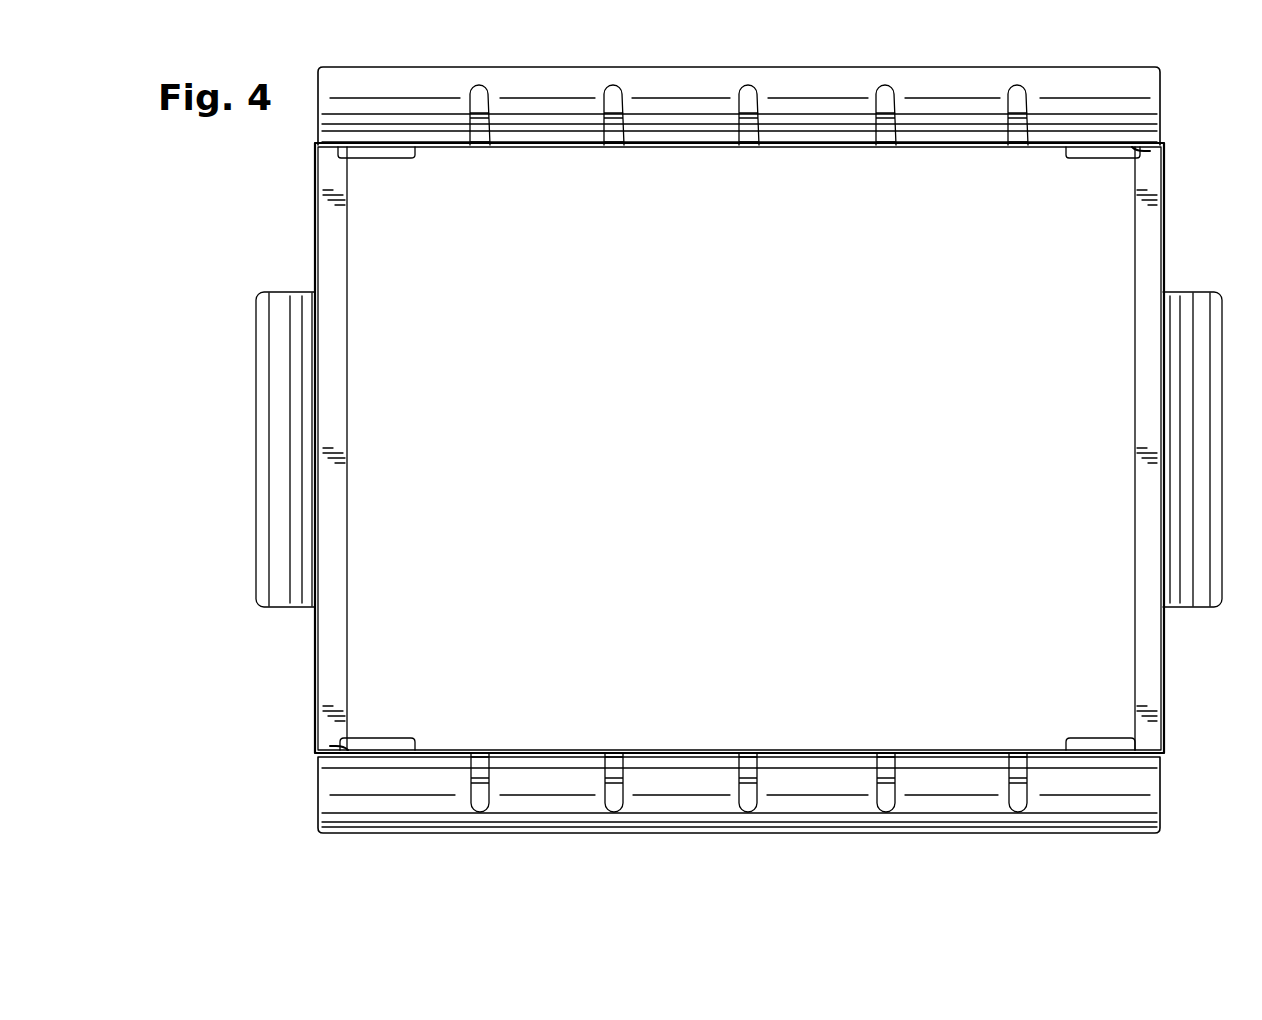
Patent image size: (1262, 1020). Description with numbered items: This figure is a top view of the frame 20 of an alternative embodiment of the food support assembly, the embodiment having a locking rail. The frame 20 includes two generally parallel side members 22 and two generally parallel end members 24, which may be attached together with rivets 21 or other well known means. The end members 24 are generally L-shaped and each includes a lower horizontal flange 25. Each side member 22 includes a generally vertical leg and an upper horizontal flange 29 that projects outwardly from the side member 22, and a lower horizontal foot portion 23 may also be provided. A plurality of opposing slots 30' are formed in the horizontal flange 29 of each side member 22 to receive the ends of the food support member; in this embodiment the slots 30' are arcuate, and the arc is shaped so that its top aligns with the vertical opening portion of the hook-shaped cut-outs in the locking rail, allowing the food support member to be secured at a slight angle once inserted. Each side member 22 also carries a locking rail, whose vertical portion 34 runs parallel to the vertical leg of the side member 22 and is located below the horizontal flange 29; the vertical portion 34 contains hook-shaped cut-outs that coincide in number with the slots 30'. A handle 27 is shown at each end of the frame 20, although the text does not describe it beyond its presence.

The frame 20 is at (815, 62).
The rivets 21 is at (1138, 152).
The side member 22 is at (1108, 58).
The lower horizontal foot portion 23 is at (412, 152).
The end member 24 is at (312, 170).
The lower horizontal flange 25 is at (347, 508).
The handle 27 is at (275, 592).
The upper horizontal flange 29 is at (700, 82).
The arcuate slots 30' is at (697, 450).
The vertical portion 34 is at (750, 112).